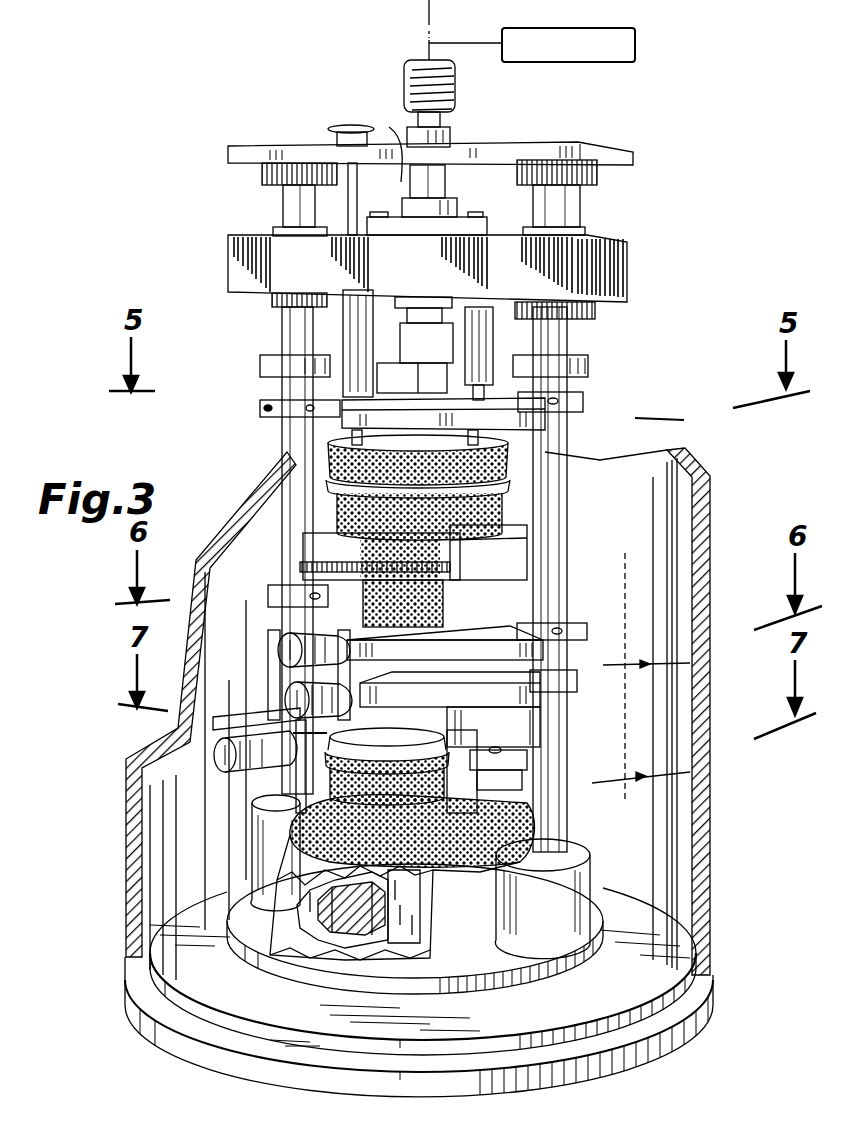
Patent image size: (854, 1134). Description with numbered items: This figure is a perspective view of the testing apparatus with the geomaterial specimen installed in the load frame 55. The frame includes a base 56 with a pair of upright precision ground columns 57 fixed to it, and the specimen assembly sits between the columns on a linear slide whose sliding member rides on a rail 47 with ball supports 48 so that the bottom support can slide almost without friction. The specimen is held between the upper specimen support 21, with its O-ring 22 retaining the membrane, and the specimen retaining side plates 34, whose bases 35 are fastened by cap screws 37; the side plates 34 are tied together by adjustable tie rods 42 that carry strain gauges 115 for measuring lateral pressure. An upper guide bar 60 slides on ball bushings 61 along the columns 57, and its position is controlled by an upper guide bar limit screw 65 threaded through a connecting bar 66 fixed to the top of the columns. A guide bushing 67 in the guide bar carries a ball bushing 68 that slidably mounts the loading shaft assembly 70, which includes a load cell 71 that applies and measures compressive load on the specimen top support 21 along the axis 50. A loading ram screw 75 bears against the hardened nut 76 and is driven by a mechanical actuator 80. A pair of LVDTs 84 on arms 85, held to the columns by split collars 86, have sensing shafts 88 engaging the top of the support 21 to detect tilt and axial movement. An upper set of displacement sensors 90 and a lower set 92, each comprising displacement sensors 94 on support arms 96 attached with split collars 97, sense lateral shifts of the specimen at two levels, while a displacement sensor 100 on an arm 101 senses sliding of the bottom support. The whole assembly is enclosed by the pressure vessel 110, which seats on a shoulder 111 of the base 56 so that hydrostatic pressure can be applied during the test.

The upper specimen support 21 is at (430, 448).
The O-ring 22 is at (398, 488).
The specimen retaining side plates 34 is at (515, 583).
The bases 35 is at (478, 790).
The cap screws 37 is at (500, 762).
The tie rods 42 is at (368, 540).
The rail 47 is at (320, 917).
The ball supports 48 is at (386, 902).
The axis 50 is at (428, 15).
The load frame 55 is at (580, 565).
The base 56 is at (568, 1023).
The columns 57 is at (290, 497).
The upper guide bar 60 is at (613, 269).
The ball bushings 61 is at (587, 230).
The upper guide bar limit screw 65 is at (347, 202).
The connecting bar 66 is at (537, 150).
The guide bushing 67 is at (487, 227).
The ball bushing 68 is at (452, 204).
The loading shaft assembly 70 is at (365, 140).
The load cell 71 is at (440, 353).
The loading ram screw 75 is at (455, 90).
The nut 76 is at (450, 133).
The mechanical actuator 80 is at (600, 63).
The LVDTs 84 is at (352, 330).
The arms 85 is at (545, 419).
The split collars 86 is at (277, 400).
The sensing shafts 88 is at (350, 437).
The upper set of displacement sensors 90 is at (425, 644).
The lower set of displacement sensors 92 is at (420, 713).
The displacement sensors 94 is at (283, 667).
The support arms 96 is at (467, 655).
The split collars 97 is at (285, 610).
The displacement sensor 100 is at (222, 775).
The arm 101 is at (262, 703).
The pressure vessel 110 is at (711, 495).
The shoulder 111 is at (702, 991).
The strain gauges 115 is at (378, 582).